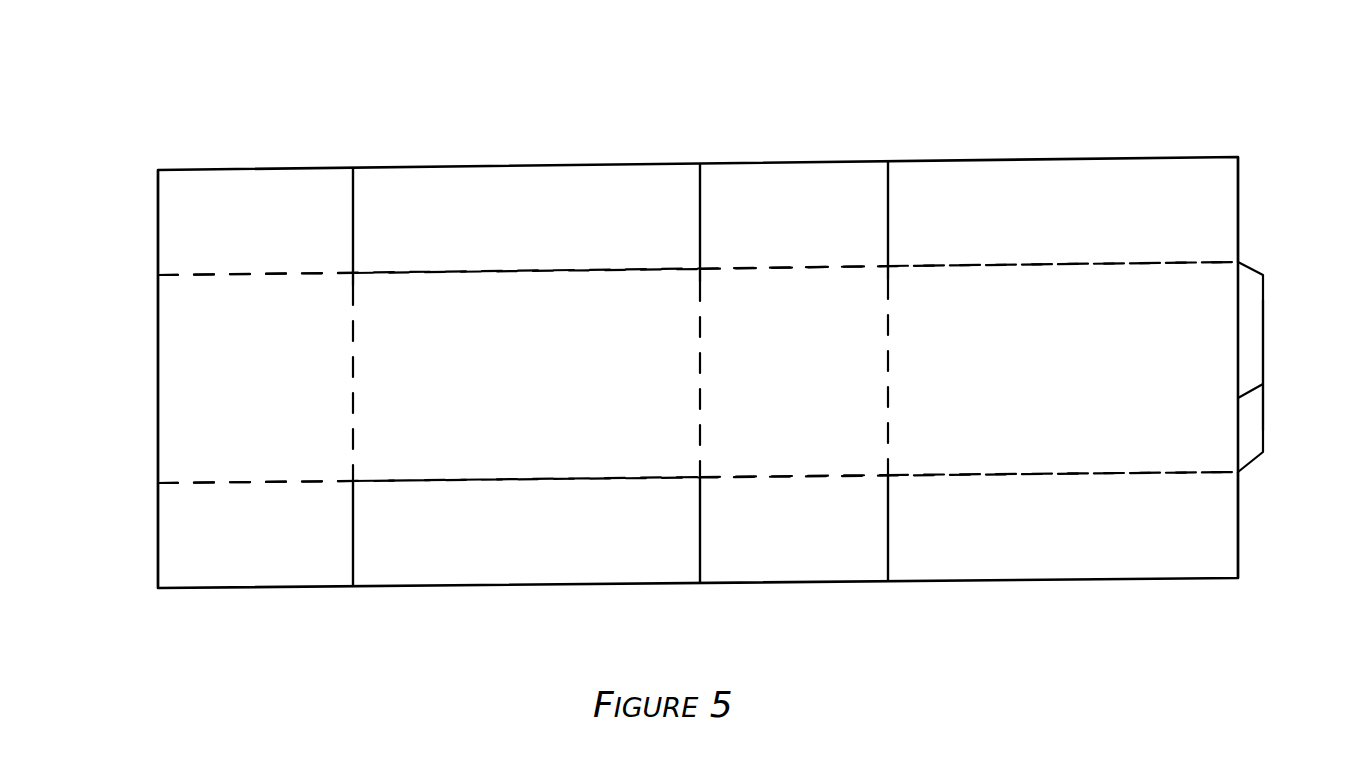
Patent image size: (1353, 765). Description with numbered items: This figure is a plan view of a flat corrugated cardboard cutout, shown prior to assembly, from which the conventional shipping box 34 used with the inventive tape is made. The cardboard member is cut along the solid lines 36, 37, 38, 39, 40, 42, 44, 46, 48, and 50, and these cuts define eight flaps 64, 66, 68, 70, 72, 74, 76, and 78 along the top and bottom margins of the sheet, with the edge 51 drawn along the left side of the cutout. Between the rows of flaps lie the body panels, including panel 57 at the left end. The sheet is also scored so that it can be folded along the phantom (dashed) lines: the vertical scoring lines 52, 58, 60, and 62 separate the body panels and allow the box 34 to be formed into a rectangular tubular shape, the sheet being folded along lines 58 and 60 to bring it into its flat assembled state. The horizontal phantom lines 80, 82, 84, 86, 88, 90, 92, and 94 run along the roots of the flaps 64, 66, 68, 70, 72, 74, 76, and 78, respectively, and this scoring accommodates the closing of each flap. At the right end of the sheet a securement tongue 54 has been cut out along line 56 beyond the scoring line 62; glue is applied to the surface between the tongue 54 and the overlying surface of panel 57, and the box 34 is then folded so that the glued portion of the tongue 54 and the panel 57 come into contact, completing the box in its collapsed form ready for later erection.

The box 34 is at (1236, 110).
The cut line 36 is at (158, 208).
The cut line 37 is at (158, 558).
The cut line 38 is at (353, 203).
The cut line 39 is at (353, 548).
The cut line 40 is at (700, 202).
The cut line 42 is at (700, 545).
The cut line 44 is at (888, 203).
The cut line 46 is at (888, 545).
The cut line 48 is at (1238, 207).
The cut line 50 is at (1238, 538).
The side edge 51 is at (158, 368).
The scoring line 52 is at (353, 340).
The securement tongue 54 is at (1252, 312).
The cut line 56 is at (1264, 357).
The panel 57 is at (210, 386).
The scoring line 58 is at (700, 341).
The scoring line 60 is at (888, 350).
The scoring line 62 is at (1263, 384).
The flap 64 is at (252, 240).
The flap 66 is at (222, 556).
The flap 68 is at (483, 243).
The flap 70 is at (483, 555).
The flap 72 is at (760, 244).
The flap 74 is at (755, 556).
The flap 76 is at (1098, 234).
The flap 78 is at (1027, 557).
The scoring line 80 is at (262, 274).
The scoring line 82 is at (276, 483).
The scoring line 84 is at (520, 272).
The scoring line 86 is at (487, 479).
The scoring line 88 is at (775, 270).
The scoring line 90 is at (776, 477).
The scoring line 92 is at (1045, 266).
The scoring line 94 is at (1032, 474).